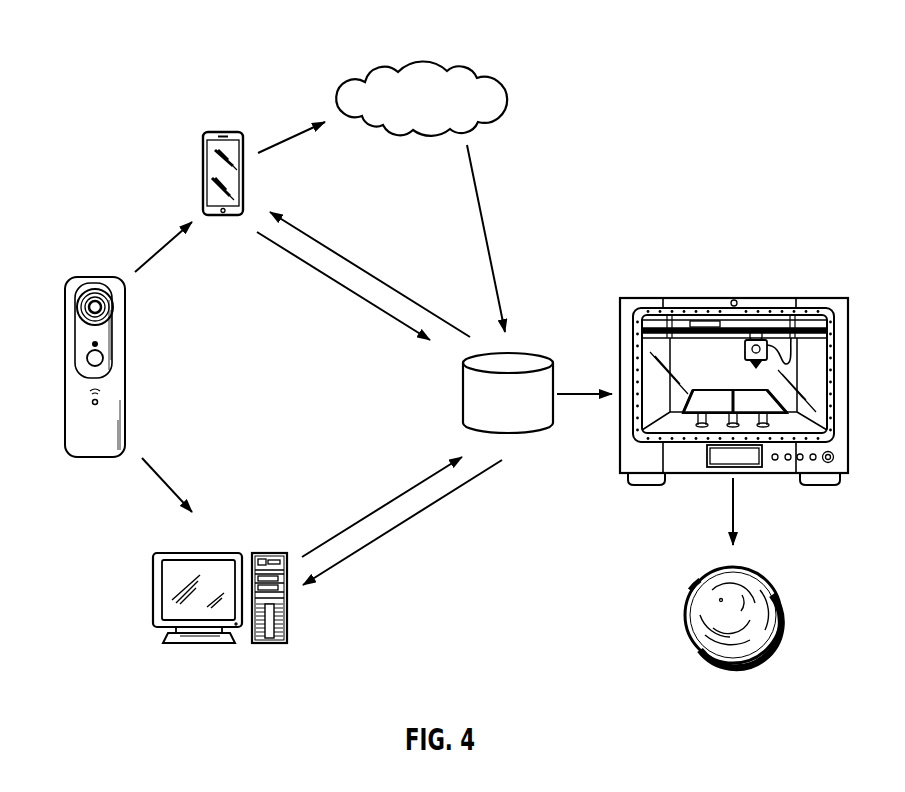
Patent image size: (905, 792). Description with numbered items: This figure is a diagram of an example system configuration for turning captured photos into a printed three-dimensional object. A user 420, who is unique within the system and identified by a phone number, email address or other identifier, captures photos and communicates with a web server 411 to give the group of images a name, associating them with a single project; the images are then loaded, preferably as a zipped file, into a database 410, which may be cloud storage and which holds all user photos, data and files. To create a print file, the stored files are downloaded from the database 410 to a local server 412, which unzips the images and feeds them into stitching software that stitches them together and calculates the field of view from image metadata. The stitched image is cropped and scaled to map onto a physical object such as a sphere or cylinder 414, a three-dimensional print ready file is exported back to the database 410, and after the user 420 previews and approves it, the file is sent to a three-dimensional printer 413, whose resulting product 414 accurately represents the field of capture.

The database 410 is at (463, 392).
The web server 411 is at (420, 63).
The local server 412 is at (207, 553).
The three-dimensional printer 413 is at (793, 298).
The sphere or cylinder 414 is at (772, 584).
The user 420 is at (224, 132).